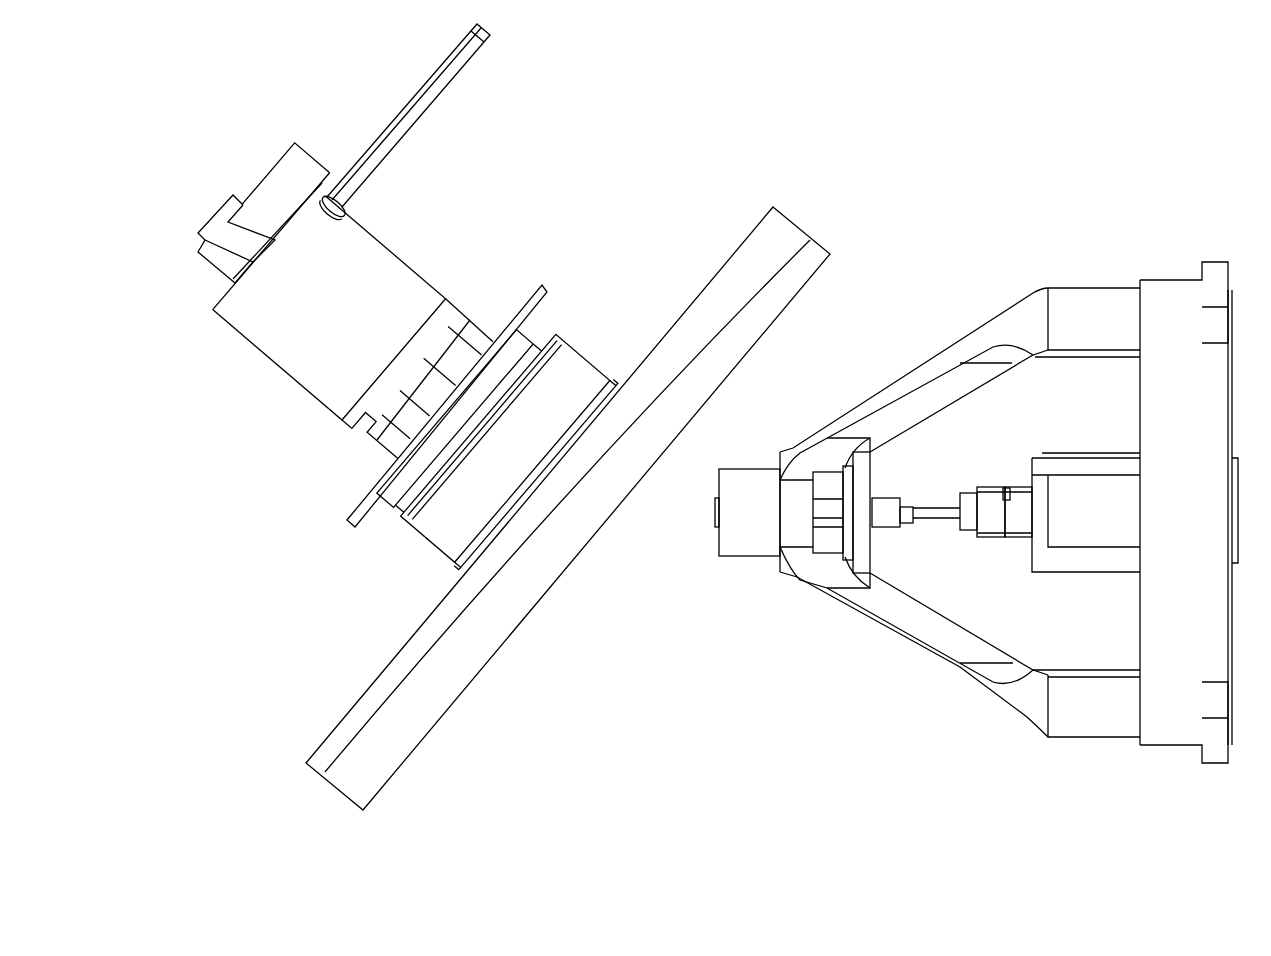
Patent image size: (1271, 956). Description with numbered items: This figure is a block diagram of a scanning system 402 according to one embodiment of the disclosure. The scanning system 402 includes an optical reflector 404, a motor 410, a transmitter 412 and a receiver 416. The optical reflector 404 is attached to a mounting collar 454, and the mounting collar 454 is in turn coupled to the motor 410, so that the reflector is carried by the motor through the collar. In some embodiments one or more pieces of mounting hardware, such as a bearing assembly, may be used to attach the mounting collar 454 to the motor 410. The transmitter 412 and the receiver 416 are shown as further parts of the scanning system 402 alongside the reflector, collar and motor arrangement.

The scanning system 402 is at (1103, 73).
The optical reflector 404 is at (509, 582).
The motor 410 is at (319, 352).
The transmitter 412 is at (748, 565).
The receiver 416 is at (1179, 698).
The mounting collar 454 is at (524, 406).